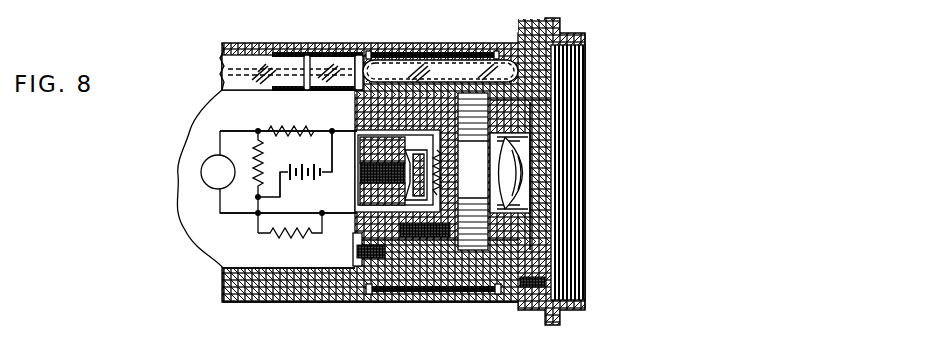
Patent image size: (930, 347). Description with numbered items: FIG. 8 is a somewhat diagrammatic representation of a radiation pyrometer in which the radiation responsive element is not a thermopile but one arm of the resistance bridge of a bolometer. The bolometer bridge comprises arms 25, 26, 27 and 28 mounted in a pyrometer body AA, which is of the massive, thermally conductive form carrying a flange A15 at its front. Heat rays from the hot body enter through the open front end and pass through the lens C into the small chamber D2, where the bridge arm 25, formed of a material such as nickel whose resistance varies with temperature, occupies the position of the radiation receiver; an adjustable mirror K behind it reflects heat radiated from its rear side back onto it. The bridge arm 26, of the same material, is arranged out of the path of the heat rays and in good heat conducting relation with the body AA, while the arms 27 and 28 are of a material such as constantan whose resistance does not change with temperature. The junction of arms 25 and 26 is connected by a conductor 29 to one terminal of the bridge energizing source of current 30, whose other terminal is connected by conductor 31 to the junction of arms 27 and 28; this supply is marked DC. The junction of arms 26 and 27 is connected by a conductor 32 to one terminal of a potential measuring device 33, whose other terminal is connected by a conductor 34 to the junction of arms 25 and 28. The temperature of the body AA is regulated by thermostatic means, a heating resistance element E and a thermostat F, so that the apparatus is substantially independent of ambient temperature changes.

The thermostat F is at (243, 63).
The heating resistance element E is at (427, 50).
The flange A15 is at (569, 45).
The pyrometer body AA is at (297, 300).
The adjustable mirror K is at (397, 157).
The chamber D2 is at (472, 176).
The bridge arm 25 is at (446, 172).
The lens C is at (537, 174).
The conductor 32 is at (241, 113).
The conductor 34 is at (243, 226).
The potential measuring device 33 is at (212, 161).
The bridge arm 27 is at (256, 160).
The bridge arm 26 is at (287, 113).
The bridge energizing source of current 30 is at (310, 158).
The conductor 29 is at (332, 150).
The conductor 31 is at (279, 190).
The DC supply connection DC is at (357, 195).
The bridge arm 28 is at (295, 240).